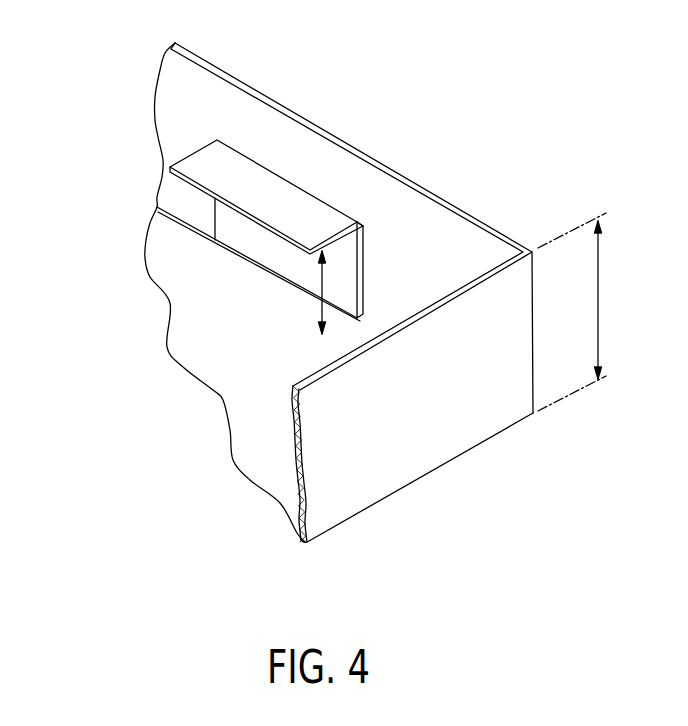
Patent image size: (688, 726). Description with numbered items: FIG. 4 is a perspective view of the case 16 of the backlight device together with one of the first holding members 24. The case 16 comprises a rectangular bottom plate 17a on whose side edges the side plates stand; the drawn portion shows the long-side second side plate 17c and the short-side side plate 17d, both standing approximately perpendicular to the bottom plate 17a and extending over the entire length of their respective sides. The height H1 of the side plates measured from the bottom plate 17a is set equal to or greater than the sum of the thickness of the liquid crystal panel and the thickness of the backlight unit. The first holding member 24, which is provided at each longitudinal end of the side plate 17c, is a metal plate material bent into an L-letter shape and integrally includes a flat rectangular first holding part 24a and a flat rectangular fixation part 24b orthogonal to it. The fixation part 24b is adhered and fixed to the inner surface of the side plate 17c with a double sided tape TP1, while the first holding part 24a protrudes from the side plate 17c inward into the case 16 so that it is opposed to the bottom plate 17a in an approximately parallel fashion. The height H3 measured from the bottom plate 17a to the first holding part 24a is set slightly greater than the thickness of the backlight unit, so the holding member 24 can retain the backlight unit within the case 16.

The case 16 is at (347, 292).
The bottom plate 17a is at (245, 380).
The side plate 17c is at (437, 227).
The side plate 17d is at (380, 472).
The first holding member 24 is at (193, 230).
The first holding part 24a is at (225, 182).
The fixation part 24b is at (247, 237).
The double sided tape TP1 is at (363, 247).
The height of the side plates H1 is at (572, 312).
The height to the first holding part H3 is at (322, 285).